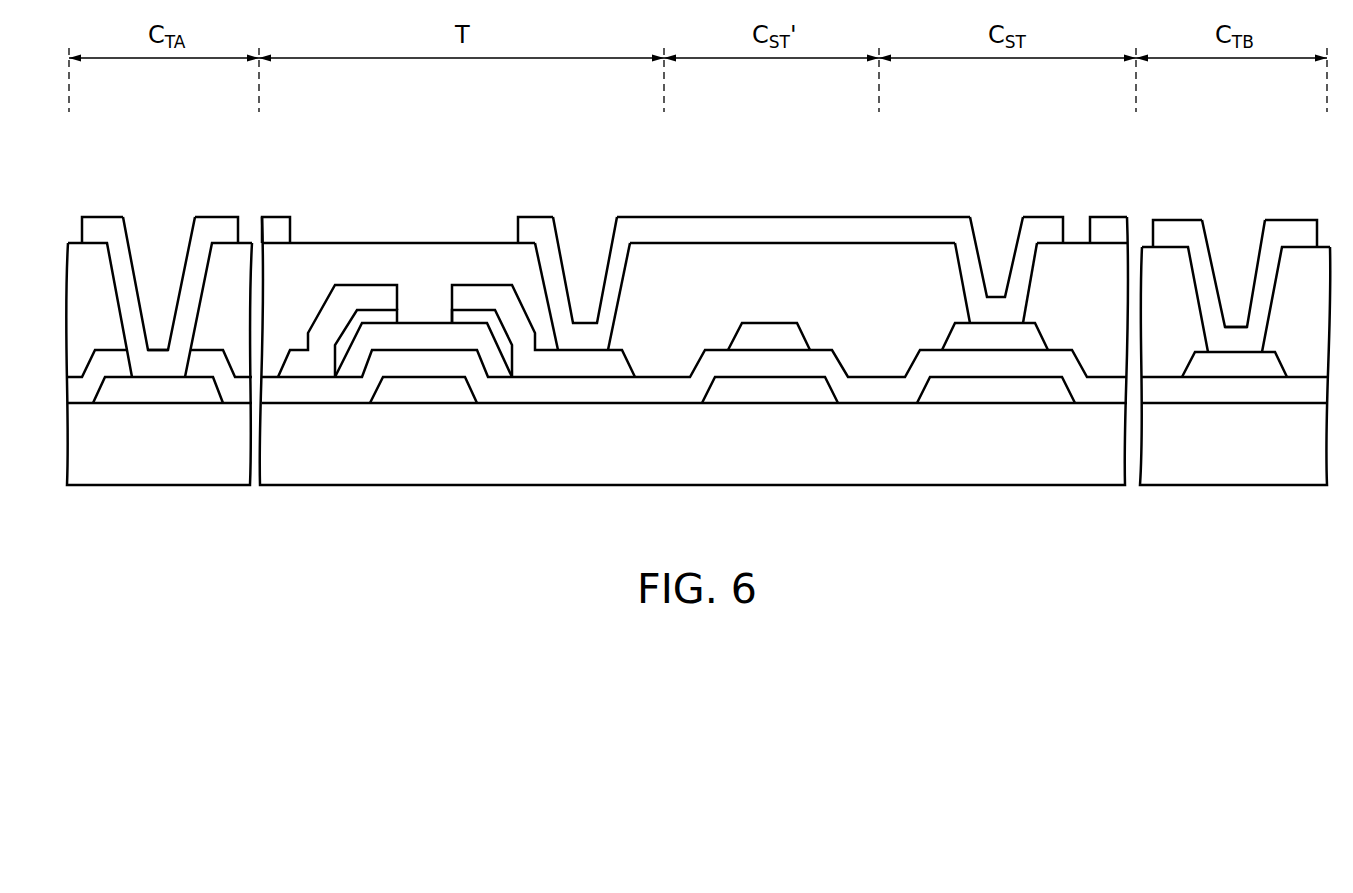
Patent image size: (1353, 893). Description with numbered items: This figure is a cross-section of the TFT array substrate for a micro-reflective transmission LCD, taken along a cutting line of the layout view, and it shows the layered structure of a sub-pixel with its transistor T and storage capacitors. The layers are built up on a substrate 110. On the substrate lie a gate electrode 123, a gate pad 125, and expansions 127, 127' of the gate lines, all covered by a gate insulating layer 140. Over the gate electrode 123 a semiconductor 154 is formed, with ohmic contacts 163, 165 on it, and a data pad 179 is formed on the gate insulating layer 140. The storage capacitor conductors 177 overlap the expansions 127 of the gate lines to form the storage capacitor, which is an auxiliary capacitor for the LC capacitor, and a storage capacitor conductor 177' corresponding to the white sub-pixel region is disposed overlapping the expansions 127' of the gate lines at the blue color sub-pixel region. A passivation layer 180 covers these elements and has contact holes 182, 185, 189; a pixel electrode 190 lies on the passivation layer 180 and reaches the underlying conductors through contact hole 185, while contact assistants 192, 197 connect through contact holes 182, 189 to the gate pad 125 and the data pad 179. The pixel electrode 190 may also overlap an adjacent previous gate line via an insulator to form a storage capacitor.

The insulating substrate 110 is at (78, 455).
The gate electrode 123 is at (425, 398).
The gate pad 125 is at (125, 398).
The expansion of gate line 127 is at (996, 461).
The expansion of gate line 127' is at (770, 461).
The gate insulating layer 140 is at (237, 398).
The semiconductor stripe 154 is at (370, 338).
The ohmic contact 163 is at (383, 313).
The ohmic contact 165 is at (475, 317).
The storage capacitor conductor 177 is at (995, 434).
The storage capacitor conductor 177' is at (781, 434).
The data pad 179 is at (1210, 368).
The passivation layer 180 is at (92, 262).
The contact hole 182 is at (157, 238).
The contact hole 185 is at (583, 238).
The contact hole 189 is at (1232, 238).
The pixel electrode 190 is at (278, 232).
The contact assistant 192 is at (158, 362).
The contact assistant 197 is at (1235, 340).